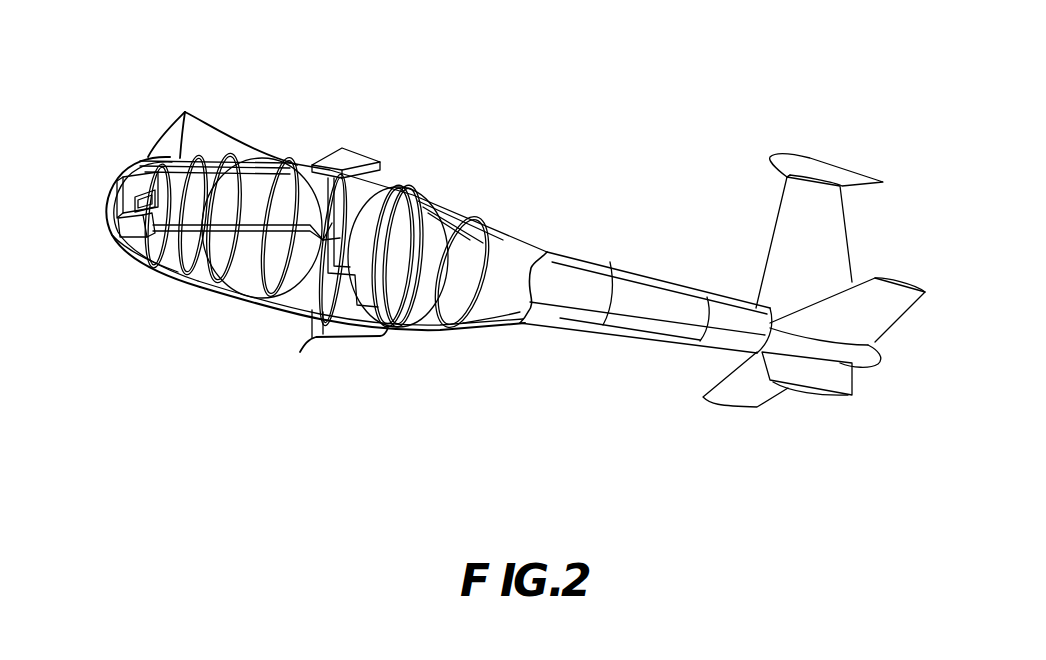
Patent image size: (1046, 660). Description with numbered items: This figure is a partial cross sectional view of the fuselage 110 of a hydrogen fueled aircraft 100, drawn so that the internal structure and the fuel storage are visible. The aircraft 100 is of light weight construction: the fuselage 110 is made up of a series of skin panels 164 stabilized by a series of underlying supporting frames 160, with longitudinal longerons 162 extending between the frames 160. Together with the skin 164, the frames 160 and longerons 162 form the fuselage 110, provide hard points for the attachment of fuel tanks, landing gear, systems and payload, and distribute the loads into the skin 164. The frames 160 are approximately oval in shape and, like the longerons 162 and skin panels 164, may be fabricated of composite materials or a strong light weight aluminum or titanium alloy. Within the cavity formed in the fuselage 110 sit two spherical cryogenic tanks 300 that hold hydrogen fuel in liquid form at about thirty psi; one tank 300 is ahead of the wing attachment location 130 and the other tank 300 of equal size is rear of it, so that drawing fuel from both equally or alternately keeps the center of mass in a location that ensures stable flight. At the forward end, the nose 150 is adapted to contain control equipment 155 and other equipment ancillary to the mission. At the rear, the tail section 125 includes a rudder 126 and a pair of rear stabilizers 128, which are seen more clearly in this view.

The aircraft 100 is at (343, 436).
The fuselage 110 is at (602, 262).
The tail section 125 is at (862, 115).
The rudder 126 is at (775, 245).
The rear stabilizers 128 is at (890, 283).
The wing attachment location 130 is at (368, 146).
The nose 150 is at (150, 336).
The control equipment 155 is at (127, 198).
The supporting frames 160 is at (185, 112).
The longerons 162 is at (214, 272).
The skin panels 164 is at (642, 327).
The cryogenic tanks 300 is at (243, 272).